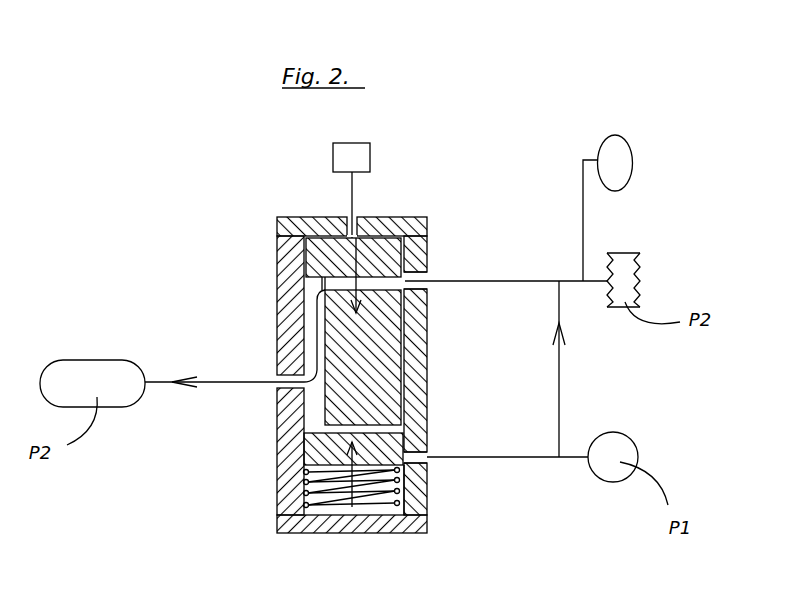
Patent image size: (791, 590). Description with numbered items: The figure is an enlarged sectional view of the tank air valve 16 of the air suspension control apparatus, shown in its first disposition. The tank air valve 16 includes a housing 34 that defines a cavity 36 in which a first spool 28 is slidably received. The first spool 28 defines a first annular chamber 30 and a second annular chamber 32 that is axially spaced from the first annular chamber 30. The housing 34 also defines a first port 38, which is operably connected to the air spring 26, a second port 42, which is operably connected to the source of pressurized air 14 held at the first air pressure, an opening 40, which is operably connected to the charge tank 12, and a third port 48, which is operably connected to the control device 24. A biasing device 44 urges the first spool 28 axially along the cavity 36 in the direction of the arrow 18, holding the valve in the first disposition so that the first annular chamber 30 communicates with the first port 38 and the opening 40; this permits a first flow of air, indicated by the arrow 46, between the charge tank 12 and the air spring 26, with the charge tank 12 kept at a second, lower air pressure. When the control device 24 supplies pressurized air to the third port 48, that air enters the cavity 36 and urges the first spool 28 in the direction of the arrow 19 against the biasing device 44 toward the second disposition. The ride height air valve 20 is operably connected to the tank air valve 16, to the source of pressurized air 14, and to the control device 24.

The charge tank 12 is at (113, 370).
The source of pressurized air 14 is at (613, 482).
The tank air valve 16 is at (445, 217).
The arrow 18 is at (377, 502).
The arrow 19 is at (360, 297).
The ride height air valve 20 is at (620, 173).
The control device 24 is at (357, 155).
The air spring 26 is at (620, 290).
The first spool 28 is at (375, 347).
The first annular chamber 30 is at (420, 248).
The second annular chamber 32 is at (352, 424).
The housing 34 is at (285, 490).
The cavity 36 is at (549, 369).
The first port 38 is at (423, 268).
The opening 40 is at (278, 352).
The second port 42 is at (420, 445).
The biasing device 44 is at (427, 473).
The arrow 46 is at (248, 383).
The third port 48 is at (346, 232).